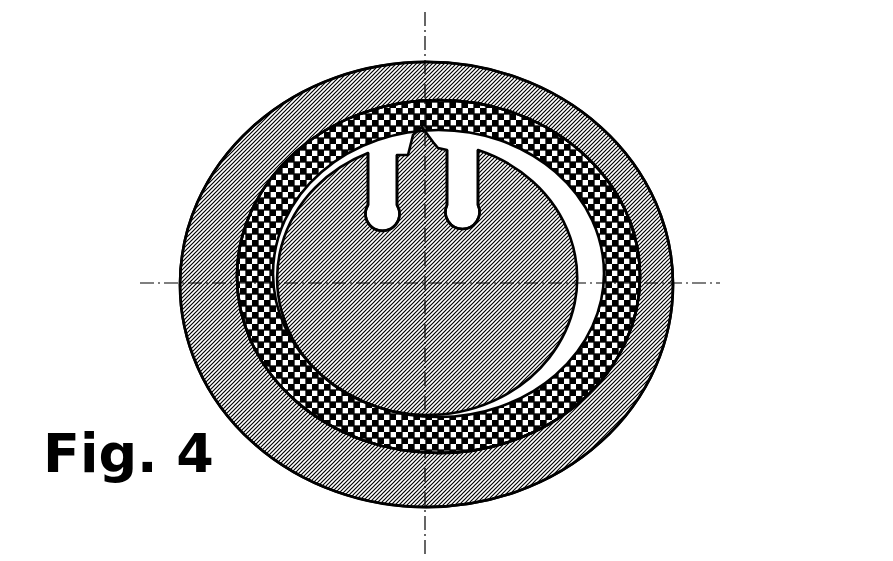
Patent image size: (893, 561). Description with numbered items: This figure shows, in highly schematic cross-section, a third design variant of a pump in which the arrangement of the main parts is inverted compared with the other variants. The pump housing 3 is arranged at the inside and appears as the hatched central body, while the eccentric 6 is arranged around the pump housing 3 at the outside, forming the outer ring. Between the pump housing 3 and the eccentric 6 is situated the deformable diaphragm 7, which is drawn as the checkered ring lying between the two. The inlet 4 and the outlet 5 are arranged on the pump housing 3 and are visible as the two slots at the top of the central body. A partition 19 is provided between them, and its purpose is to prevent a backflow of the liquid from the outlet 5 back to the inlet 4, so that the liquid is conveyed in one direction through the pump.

The pump housing 3 is at (595, 395).
The partition 19 is at (403, 100).
The eccentric 6 is at (640, 180).
The deformable diaphragm 7 is at (643, 237).
The inlet 4 is at (379, 173).
The outlet 5 is at (462, 183).